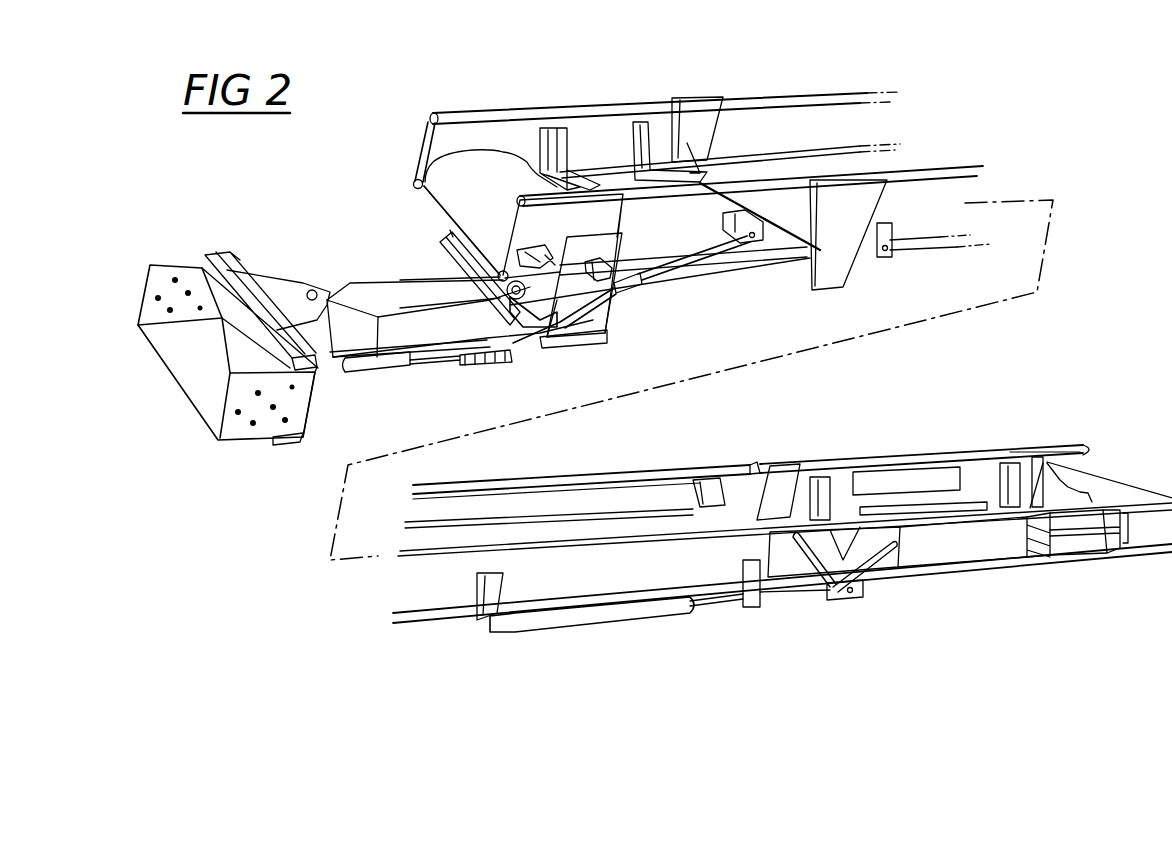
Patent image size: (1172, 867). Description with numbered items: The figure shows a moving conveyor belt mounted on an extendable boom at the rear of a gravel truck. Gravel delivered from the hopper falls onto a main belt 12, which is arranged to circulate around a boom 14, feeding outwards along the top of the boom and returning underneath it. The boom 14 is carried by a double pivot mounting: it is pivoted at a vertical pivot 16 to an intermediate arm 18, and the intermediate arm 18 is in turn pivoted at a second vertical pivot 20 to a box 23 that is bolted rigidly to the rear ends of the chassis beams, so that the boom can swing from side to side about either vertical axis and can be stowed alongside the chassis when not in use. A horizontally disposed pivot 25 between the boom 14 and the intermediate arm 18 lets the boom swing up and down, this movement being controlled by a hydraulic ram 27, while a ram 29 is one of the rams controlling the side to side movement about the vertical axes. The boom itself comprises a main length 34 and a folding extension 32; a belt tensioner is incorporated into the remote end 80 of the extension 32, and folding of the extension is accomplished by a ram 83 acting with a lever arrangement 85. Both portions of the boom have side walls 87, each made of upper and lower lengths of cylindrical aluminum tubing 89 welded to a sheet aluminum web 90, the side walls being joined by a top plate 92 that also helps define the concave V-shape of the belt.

The main belt 12 is at (515, 156).
The boom 14 is at (803, 94).
The pivot 16 is at (548, 337).
The intermediate arm 18 is at (418, 258).
The pivot 20 is at (314, 291).
The box 23 is at (165, 272).
The horizontal pivot 25 is at (613, 293).
The hydraulic ram 27 is at (640, 282).
The ram 29 is at (382, 377).
The folding extension 32 is at (845, 467).
The main length 34 is at (654, 472).
The remote end 80 is at (1122, 478).
The ram 83 is at (650, 612).
The lever arrangement 85 is at (807, 560).
The side wall 87 is at (481, 100).
The cylindrical aluminum tubing 89 is at (428, 118).
The sheet aluminum web 90 is at (427, 158).
The top plate 92 is at (750, 176).